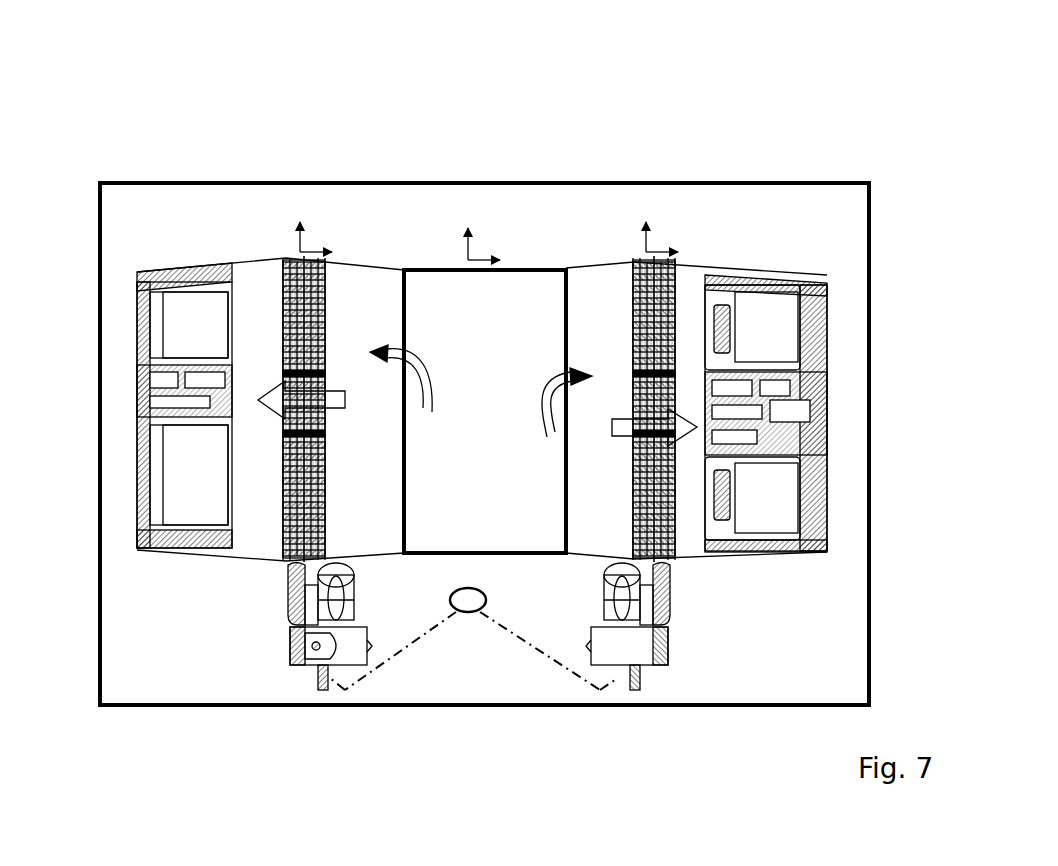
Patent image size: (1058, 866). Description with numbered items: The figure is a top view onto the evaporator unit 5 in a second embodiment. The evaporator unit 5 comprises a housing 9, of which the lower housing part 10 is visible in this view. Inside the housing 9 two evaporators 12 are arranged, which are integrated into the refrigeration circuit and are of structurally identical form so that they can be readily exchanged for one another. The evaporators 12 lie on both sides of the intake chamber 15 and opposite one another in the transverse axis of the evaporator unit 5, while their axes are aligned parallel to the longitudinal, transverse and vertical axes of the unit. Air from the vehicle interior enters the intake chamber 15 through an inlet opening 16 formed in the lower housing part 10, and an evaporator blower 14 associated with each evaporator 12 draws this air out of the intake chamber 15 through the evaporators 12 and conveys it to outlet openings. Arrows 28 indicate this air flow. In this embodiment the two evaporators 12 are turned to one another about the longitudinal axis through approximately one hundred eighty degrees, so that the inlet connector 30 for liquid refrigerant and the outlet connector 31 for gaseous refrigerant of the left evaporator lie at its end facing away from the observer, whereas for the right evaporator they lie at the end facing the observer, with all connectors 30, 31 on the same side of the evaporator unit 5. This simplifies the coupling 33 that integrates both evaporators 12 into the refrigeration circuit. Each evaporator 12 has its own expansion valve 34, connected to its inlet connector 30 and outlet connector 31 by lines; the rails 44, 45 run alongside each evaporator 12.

The evaporator unit 5 is at (893, 152).
The housing 9 is at (809, 182).
The lower housing part 10 is at (752, 205).
The evaporator 12 is at (281, 290).
The evaporator blower 14 is at (178, 515).
The intake chamber 15 is at (504, 446).
The inlet opening 16 is at (492, 278).
The transport direction arrows 28 is at (341, 391).
The inlet connector 30 is at (288, 582).
The outlet connector 31 is at (336, 592).
The coupling 33 is at (528, 660).
The expansion valve 34 is at (286, 647).
The outer chain rail 44 is at (323, 455).
The inner chain rail 45 is at (292, 485).